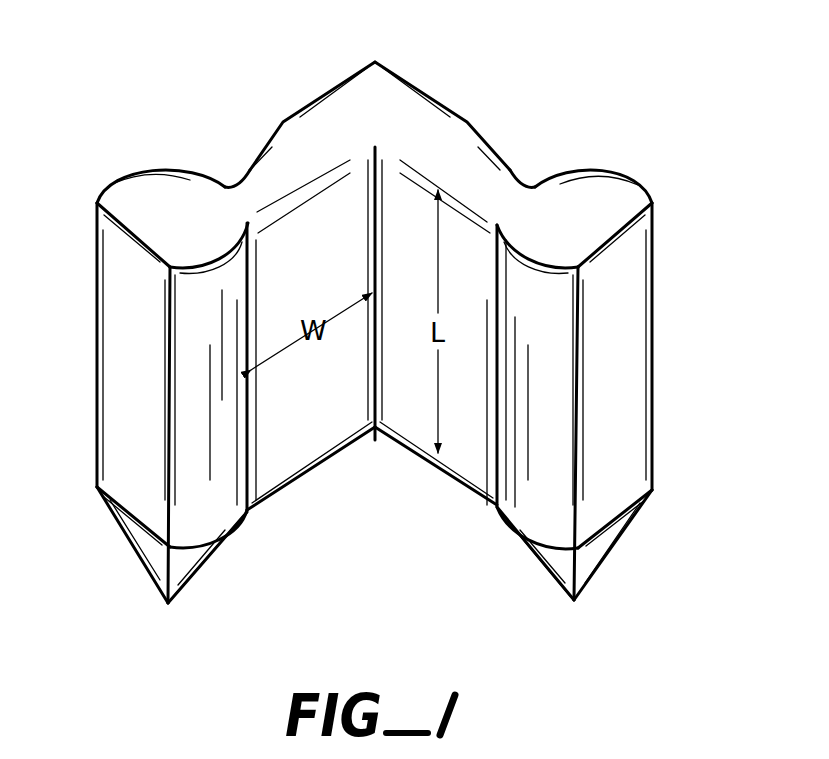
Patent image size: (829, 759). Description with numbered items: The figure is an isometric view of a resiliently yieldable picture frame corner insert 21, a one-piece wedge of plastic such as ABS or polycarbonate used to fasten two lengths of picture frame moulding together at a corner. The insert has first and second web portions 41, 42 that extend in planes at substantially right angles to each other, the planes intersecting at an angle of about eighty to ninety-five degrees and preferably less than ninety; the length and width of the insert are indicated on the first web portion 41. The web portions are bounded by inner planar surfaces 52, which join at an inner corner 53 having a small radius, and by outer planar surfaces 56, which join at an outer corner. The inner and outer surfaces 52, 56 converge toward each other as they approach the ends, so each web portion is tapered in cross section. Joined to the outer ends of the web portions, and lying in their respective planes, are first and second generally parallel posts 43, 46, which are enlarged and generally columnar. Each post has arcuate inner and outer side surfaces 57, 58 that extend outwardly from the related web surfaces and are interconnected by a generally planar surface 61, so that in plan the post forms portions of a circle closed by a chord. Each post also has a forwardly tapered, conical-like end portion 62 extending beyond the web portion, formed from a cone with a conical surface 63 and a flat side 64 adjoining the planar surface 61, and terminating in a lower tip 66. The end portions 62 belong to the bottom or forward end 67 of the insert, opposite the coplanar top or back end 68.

The corner insert 21 is at (372, 575).
The first web portion 41 is at (280, 120).
The second web portion 42 is at (462, 118).
The first post 43 is at (95, 415).
The second post 46 is at (655, 430).
The inner planar surfaces 52 is at (275, 458).
The inner corner 53 is at (380, 180).
The outer planar surfaces 56 is at (255, 158).
The inner side surface 57 is at (195, 488).
The outer side surface 58 is at (130, 173).
The planar surface 61 is at (127, 310).
The forwardly tapered end portion 62 is at (194, 598).
The conical surface 63 is at (200, 577).
The flat side 64 is at (150, 555).
The lower tip 66 is at (168, 608).
The bottom or forward end 67 is at (386, 442).
The top or back end 68 is at (356, 112).